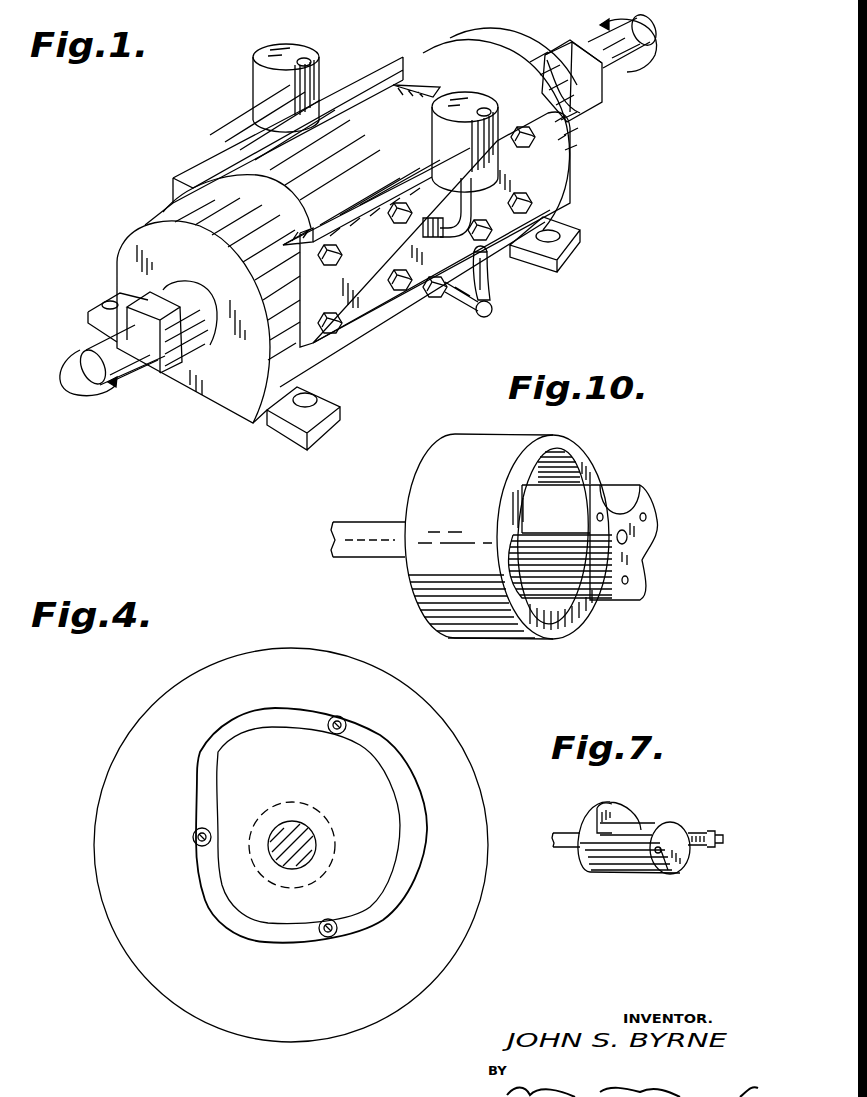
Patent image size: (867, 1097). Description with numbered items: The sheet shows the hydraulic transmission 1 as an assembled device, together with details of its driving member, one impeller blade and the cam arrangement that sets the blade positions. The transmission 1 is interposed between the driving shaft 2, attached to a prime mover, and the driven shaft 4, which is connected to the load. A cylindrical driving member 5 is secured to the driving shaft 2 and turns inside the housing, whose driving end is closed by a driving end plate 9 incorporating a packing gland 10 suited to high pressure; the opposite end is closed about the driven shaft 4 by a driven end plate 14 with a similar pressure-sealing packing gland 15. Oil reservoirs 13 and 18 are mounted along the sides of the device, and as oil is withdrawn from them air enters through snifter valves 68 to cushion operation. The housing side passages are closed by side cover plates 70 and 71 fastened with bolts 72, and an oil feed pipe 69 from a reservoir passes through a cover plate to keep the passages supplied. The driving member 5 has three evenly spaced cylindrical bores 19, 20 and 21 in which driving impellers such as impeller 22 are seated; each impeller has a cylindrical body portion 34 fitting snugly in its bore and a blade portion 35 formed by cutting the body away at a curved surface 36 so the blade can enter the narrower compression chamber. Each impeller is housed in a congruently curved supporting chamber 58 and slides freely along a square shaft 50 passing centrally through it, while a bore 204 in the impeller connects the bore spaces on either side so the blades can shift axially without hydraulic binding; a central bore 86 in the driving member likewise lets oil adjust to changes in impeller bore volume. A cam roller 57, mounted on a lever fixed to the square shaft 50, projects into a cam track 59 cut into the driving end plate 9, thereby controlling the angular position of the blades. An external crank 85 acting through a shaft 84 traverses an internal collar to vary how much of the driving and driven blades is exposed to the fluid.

In FIG. 1, the transmission 1 is at (215, 399).
In FIG. 1, the driving shaft 2 is at (100, 383).
In FIG. 10, the driving shaft 2 is at (370, 527).
In FIG. 4, the driving shaft 2 is at (303, 837).
In FIG. 1, the driven shaft 4 is at (656, 33).
In FIG. 10, the cylindrical driving member 5 is at (480, 417).
In FIG. 1, the driving end plate 9 is at (247, 392).
In FIG. 4, the driving end plate 9 is at (457, 808).
In FIG. 1, the packing gland 10 is at (172, 288).
In FIG. 4, the packing gland 10 is at (297, 800).
In FIG. 1, the oil reservoir 13 is at (282, 28).
In FIG. 1, the driven end plate 14 is at (503, 45).
In FIG. 1, the packing gland 15 is at (585, 117).
In FIG. 1, the oil reservoir 18 is at (458, 156).
In FIG. 10, the cylindrical bore 19 is at (565, 452).
In FIG. 10, the cylindrical bore 20 is at (637, 560).
In FIG. 10, the cylindrical bore 21 is at (524, 558).
In FIG. 7, the driving impeller 22 is at (590, 872).
In FIG. 7, the cylindrical body portion 34 is at (590, 815).
In FIG. 7, the blade portion 35 is at (637, 860).
In FIG. 7, the cutaway surface 36 is at (643, 826).
In FIG. 7, the square shaft 50 is at (697, 833).
In FIG. 4, the cam roller 57 is at (348, 725).
In FIG. 10, the supporting chamber 58 is at (620, 492).
In FIG. 4, the cam track 59 is at (392, 755).
In FIG. 1, the snifter valve 68 is at (307, 60).
In FIG. 1, the oil feed pipe 69 is at (465, 192).
In FIG. 1, the side cover plate 70 is at (226, 160).
In FIG. 1, the side cover plate 71 is at (373, 297).
In FIG. 1, the bolts 72 is at (338, 328).
In FIG. 1, the shaft 84 is at (452, 300).
In FIG. 1, the external crank 85 is at (490, 283).
In FIG. 10, the central bore 86 is at (627, 537).
In FIG. 7, the bore 204 is at (667, 870).